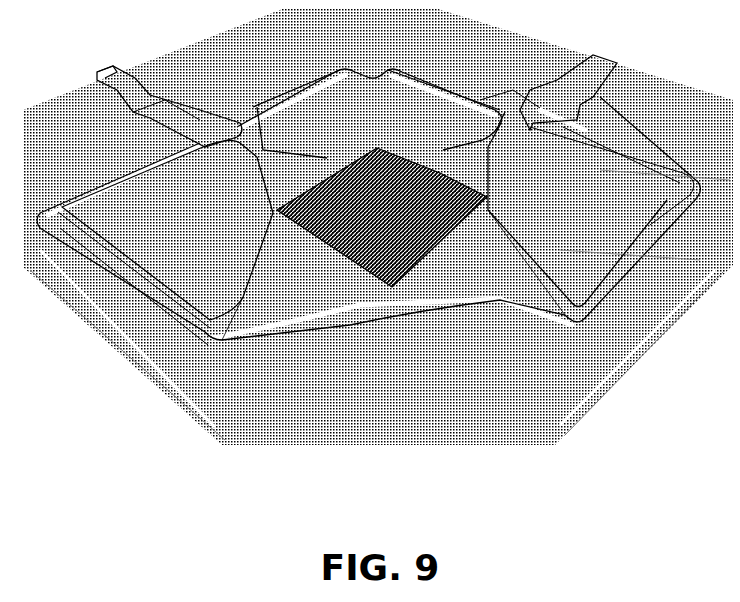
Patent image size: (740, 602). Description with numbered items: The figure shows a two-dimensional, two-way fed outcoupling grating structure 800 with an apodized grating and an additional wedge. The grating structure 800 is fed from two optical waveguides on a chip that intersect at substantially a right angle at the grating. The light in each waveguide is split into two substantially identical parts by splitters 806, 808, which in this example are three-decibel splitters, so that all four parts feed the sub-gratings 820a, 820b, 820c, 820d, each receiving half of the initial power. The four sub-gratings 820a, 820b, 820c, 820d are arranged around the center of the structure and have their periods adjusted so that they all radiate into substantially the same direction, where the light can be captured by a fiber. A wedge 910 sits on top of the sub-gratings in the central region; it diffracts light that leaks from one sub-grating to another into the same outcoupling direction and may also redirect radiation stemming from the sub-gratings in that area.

The outcoupling grating structure 800 is at (630, 405).
The splitter 806 is at (180, 105).
The splitter 808 is at (115, 78).
The sub-grating 820a is at (382, 173).
The sub-grating 820b is at (448, 210).
The sub-grating 820c is at (378, 248).
The sub-grating 820d is at (332, 222).
The wedge 910 is at (422, 252).